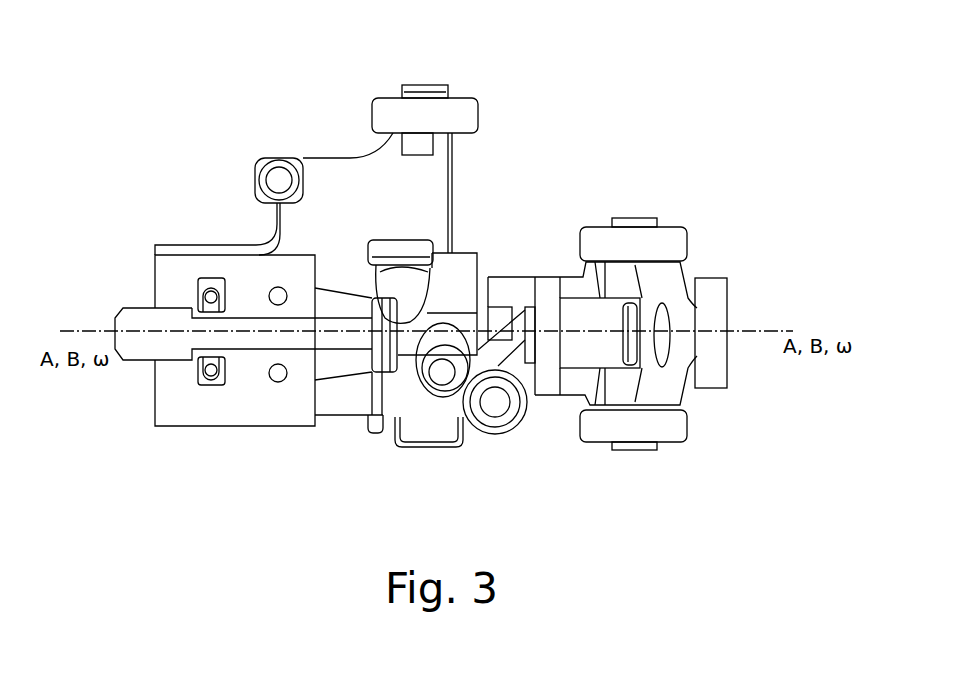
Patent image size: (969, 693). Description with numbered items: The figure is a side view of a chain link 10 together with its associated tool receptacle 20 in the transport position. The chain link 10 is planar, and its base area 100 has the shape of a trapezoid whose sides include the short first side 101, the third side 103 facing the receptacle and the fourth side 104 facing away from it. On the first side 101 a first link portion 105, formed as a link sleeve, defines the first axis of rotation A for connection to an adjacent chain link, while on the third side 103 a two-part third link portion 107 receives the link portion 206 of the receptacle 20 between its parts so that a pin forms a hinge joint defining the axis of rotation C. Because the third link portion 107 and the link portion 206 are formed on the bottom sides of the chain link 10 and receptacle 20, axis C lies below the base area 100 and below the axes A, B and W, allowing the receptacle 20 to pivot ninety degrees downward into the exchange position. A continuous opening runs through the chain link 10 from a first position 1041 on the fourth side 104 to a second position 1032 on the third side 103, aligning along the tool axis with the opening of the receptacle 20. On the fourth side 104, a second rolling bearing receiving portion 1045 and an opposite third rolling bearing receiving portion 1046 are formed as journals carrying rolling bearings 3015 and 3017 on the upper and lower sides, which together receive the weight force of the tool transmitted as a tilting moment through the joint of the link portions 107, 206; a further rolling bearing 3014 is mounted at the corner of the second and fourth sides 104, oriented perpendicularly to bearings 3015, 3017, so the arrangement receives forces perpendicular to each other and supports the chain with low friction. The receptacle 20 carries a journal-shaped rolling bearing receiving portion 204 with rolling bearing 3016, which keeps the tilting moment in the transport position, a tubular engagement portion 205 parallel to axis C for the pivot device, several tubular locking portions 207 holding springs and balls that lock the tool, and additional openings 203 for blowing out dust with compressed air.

The chain link 10 is at (692, 462).
The tool receptacle 20 is at (229, 359).
The base area 100 is at (592, 375).
The first side 101 is at (557, 370).
The third side 103 is at (448, 299).
The fourth side 104 is at (756, 304).
The first link portion 105 is at (600, 433).
The third link portion 107 is at (497, 427).
The link portion of the tool receptacle 206 is at (495, 405).
The additional openings 203 is at (211, 377).
The rolling bearing receiving portion 204 is at (425, 84).
The engagement portion 205 is at (280, 158).
The locking tubes 207 is at (375, 433).
The second position 1032 is at (490, 345).
The first position 1041 is at (760, 327).
The second rolling bearing receiving portion 1045 is at (632, 218).
The third rolling bearing receiving portion 1046 is at (640, 450).
The rolling bearing 3014 is at (718, 305).
The rolling bearing 3015 is at (652, 198).
The rolling bearing 3016 is at (445, 135).
The rolling bearing 3017 is at (696, 476).